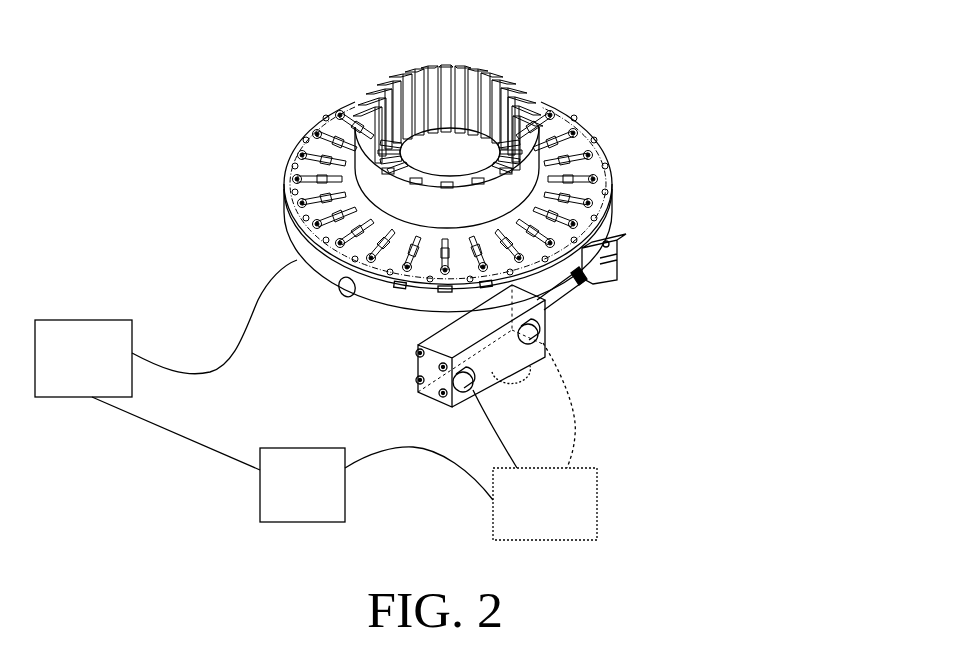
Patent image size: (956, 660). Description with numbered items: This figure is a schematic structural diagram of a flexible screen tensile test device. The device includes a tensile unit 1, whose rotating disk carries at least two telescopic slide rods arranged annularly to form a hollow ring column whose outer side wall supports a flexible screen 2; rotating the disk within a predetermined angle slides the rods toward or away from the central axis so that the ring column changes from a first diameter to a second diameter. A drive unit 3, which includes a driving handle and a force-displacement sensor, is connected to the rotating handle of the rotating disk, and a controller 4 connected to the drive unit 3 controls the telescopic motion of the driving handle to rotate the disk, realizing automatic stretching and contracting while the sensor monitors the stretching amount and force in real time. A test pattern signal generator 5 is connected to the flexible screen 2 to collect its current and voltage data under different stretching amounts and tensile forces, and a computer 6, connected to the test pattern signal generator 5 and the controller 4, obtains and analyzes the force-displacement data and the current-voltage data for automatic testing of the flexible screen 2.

The tensile unit 1 is at (583, 215).
The flexible screen 2 is at (530, 178).
The drive unit 3 is at (512, 310).
The controller 4 is at (535, 441).
The test pattern signal generator 5 is at (166, 328).
The computer 6 is at (292, 459).